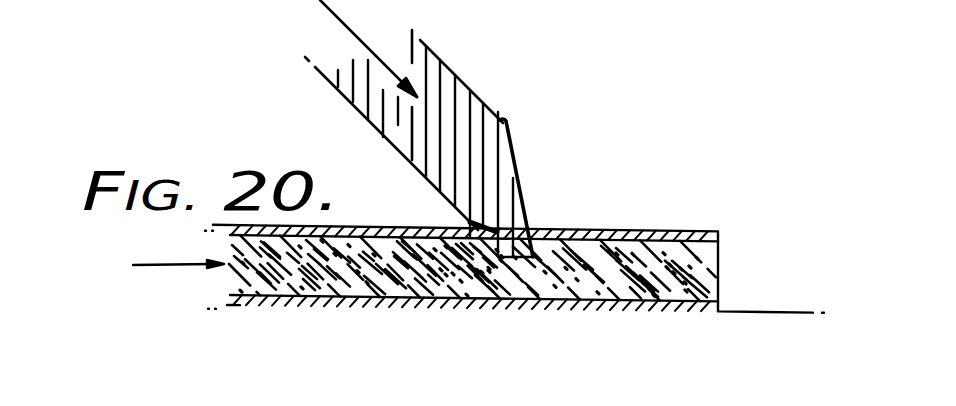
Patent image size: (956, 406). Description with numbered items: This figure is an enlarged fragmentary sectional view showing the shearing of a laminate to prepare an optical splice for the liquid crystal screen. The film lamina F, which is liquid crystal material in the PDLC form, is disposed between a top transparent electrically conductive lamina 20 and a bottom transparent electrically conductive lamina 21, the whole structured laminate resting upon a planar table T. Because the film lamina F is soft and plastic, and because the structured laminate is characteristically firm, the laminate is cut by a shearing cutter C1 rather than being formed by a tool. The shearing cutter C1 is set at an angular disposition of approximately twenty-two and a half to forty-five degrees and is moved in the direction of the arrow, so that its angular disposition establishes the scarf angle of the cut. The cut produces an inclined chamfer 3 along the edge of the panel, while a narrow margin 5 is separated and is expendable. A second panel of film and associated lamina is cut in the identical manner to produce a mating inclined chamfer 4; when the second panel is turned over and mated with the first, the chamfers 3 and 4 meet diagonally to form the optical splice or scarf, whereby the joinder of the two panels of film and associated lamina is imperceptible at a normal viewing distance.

The shearing cutter C1 is at (488, 103).
The inclined chamfer 3 is at (492, 221).
The inclined chamfer 4 is at (533, 230).
The narrow margin 5 is at (718, 260).
The top transparent electrically conductive lamina 20 is at (633, 232).
The bottom transparent electrically conductive lamina 21 is at (425, 307).
The PDLC liquid crystal material PDLC is at (622, 267).
The table T is at (338, 292).
The film lamina F is at (148, 265).